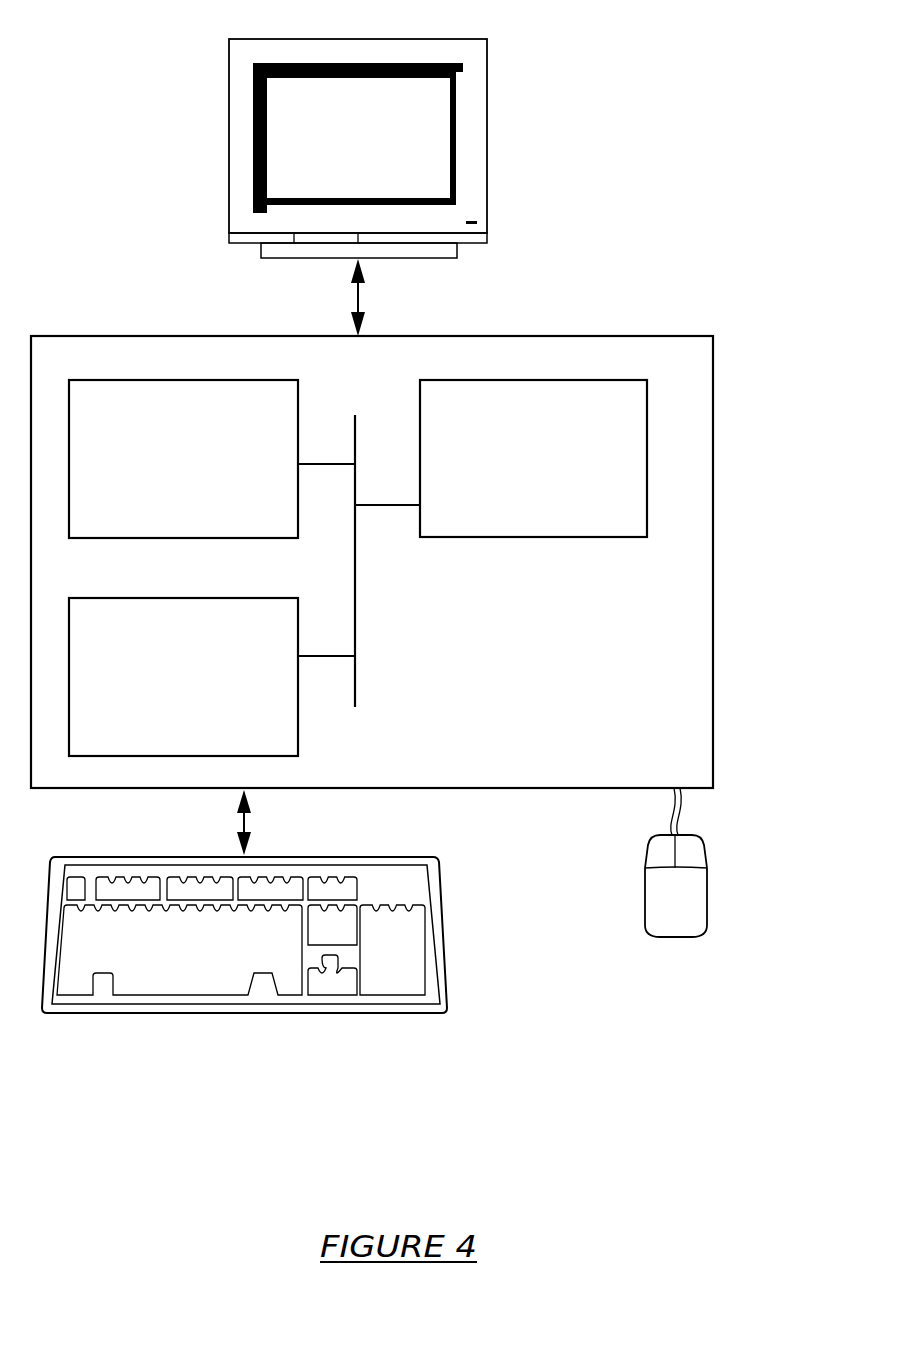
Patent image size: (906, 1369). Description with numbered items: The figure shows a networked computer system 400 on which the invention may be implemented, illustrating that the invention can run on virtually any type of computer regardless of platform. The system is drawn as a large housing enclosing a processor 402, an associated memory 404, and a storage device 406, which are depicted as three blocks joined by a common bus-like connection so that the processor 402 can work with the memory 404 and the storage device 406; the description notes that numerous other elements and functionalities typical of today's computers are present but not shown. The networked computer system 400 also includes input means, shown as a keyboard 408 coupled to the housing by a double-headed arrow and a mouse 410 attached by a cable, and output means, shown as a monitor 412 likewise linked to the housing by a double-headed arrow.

The networked computer system 400 is at (738, 190).
The processor 402 is at (511, 472).
The associated memory 404 is at (162, 472).
The storage device 406 is at (159, 689).
The keyboard 408 is at (158, 969).
The mouse 410 is at (654, 909).
The monitor 412 is at (336, 151).